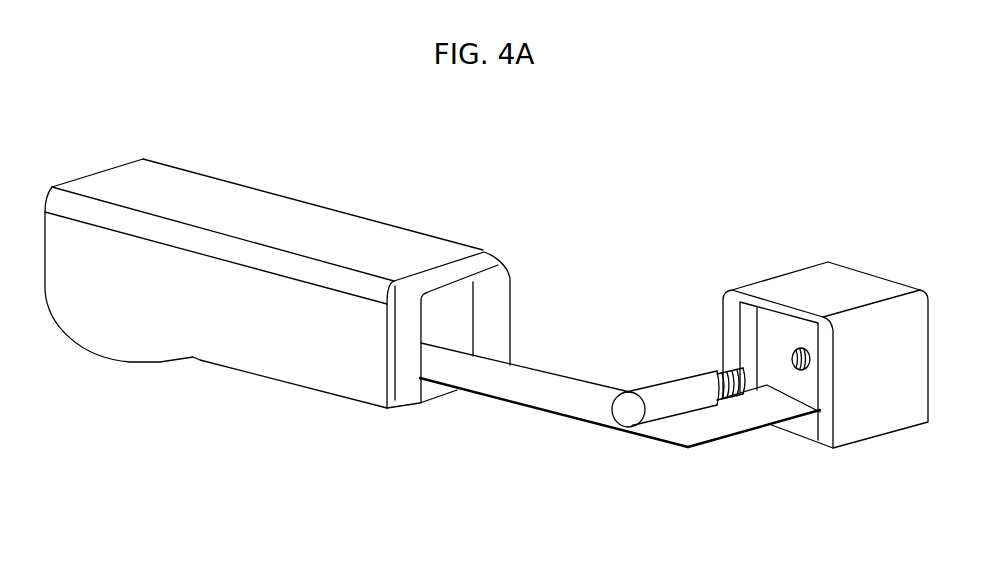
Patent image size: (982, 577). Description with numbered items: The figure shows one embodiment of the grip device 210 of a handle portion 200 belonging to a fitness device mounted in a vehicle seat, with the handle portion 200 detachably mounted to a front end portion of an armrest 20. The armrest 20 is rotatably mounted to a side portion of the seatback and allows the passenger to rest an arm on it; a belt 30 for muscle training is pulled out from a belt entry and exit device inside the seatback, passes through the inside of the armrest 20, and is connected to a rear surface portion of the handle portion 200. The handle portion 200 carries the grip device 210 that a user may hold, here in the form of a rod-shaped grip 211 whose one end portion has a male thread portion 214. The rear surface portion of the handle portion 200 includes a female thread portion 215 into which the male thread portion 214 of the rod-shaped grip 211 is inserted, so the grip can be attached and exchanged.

The armrest 20 is at (348, 207).
The belt 30 is at (527, 381).
The handle portion 200 is at (813, 288).
The grip device 210 is at (681, 358).
The rod-shaped grip 211 is at (661, 411).
The male thread portion 214 is at (742, 400).
The female thread portion 215 is at (799, 372).